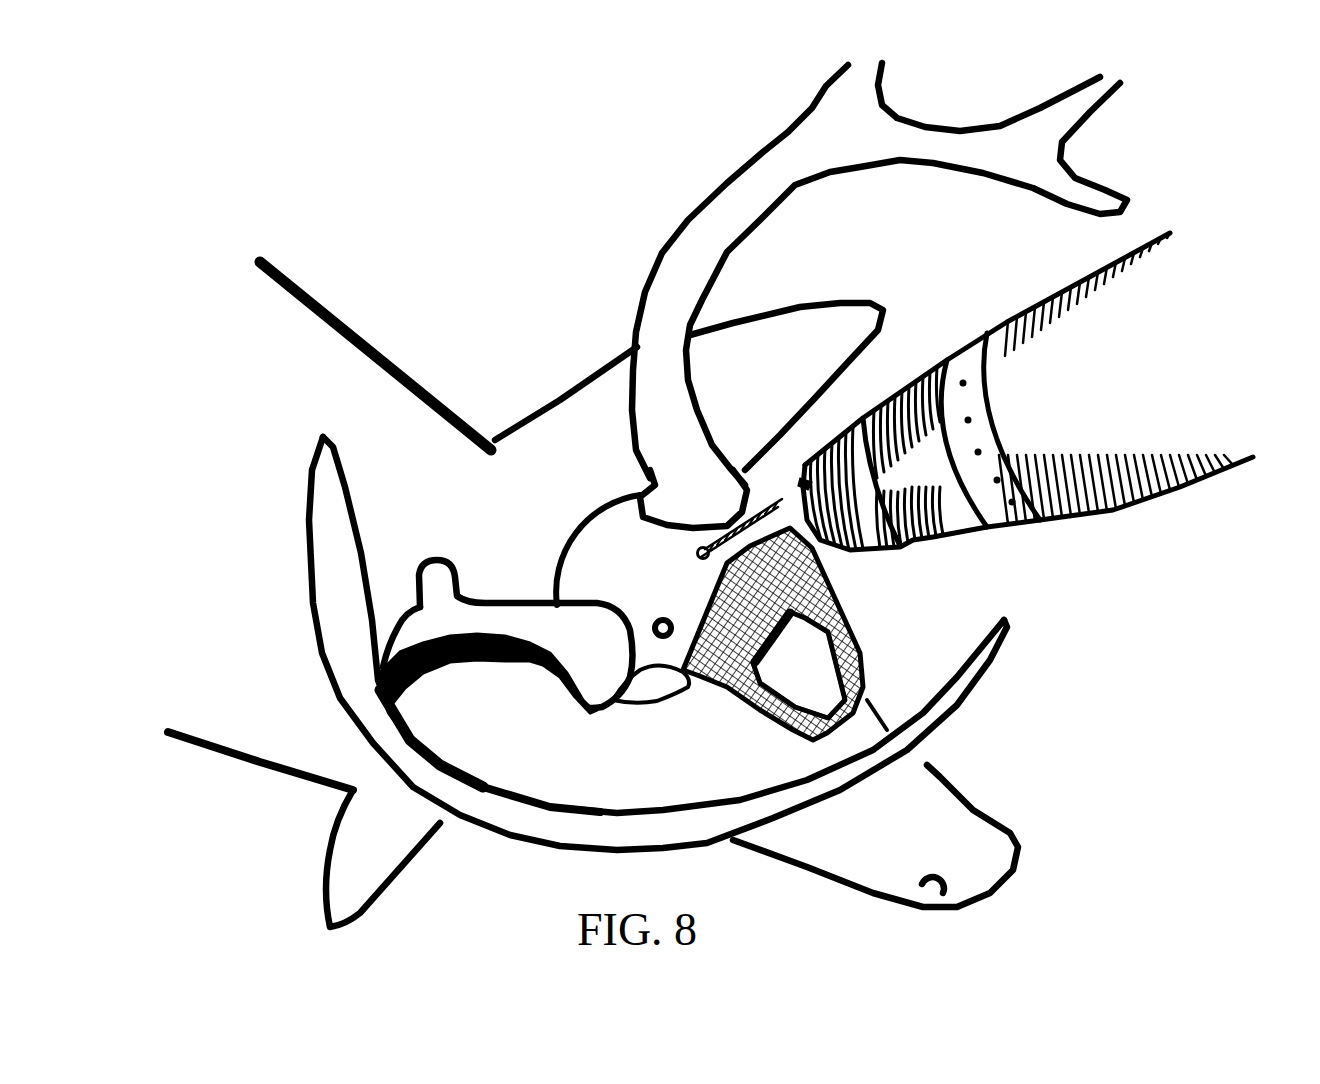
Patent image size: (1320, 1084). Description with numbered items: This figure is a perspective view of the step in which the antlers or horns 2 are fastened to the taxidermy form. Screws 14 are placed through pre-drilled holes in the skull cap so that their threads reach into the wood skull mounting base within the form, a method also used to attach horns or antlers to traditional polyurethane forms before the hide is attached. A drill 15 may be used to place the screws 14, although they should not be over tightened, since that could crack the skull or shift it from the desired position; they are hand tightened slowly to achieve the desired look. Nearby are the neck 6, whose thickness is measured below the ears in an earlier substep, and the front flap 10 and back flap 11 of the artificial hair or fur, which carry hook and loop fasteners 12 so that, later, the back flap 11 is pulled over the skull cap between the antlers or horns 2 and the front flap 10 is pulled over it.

The antlers or horns 2 is at (863, 127).
The neck 6 is at (400, 347).
The front flap 10 is at (835, 634).
The back flap 11 is at (571, 517).
The hook and loop fasteners 12 is at (815, 672).
The screws 14 is at (793, 530).
The drill 15 is at (1184, 407).